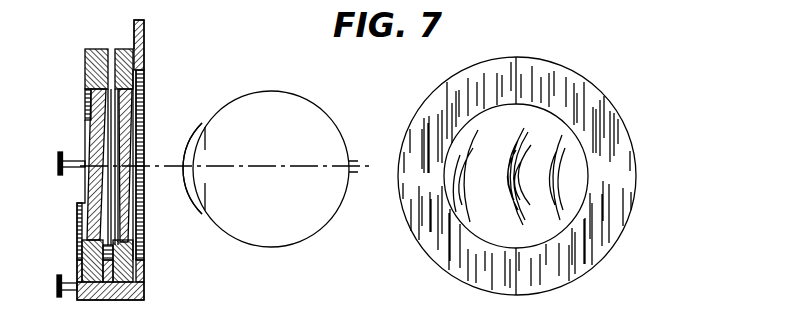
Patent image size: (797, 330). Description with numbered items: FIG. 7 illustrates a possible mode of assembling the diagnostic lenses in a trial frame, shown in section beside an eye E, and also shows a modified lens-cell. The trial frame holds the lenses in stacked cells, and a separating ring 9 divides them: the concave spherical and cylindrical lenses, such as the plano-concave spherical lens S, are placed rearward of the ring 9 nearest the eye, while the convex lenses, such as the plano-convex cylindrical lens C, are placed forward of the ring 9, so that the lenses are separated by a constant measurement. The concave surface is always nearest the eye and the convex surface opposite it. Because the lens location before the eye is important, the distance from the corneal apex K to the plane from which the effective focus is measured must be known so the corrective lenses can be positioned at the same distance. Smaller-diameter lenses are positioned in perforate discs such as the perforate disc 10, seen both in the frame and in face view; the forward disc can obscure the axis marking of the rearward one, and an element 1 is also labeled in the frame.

The perforate disc 10 is at (95, 49).
The lens element 1 is at (126, 49).
The separating ring 9 is at (105, 178).
The plano-convex cylindrical lens C is at (88, 130).
The plano-concave spherical lens S is at (125, 142).
The eye E is at (266, 169).
The corneal apex K is at (183, 168).